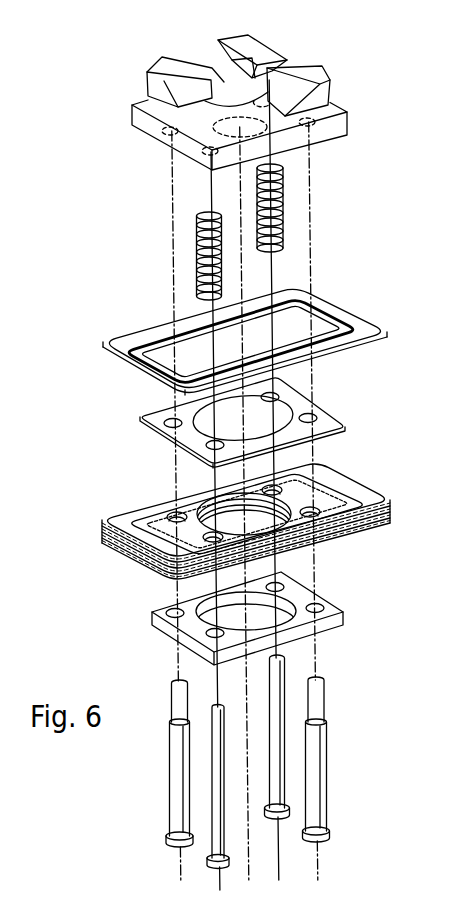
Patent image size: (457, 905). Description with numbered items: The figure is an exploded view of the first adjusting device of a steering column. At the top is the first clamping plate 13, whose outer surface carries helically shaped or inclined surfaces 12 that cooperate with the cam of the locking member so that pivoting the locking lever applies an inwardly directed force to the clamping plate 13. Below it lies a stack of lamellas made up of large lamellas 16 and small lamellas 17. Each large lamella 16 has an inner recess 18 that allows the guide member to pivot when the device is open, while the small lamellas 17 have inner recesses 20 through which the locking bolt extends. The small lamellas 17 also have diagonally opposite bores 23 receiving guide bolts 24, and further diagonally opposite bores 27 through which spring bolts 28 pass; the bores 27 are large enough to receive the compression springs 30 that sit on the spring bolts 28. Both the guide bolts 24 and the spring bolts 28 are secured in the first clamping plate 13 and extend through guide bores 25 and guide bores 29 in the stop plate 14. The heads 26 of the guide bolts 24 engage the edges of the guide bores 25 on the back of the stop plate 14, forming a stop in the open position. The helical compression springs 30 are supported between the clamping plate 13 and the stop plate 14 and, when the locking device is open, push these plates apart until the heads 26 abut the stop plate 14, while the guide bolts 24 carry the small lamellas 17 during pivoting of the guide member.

The helically shaped surfaces 12 is at (285, 90).
The first clamping plate 13 is at (338, 127).
The stop plate 14 is at (241, 613).
The large lamellas 16 is at (280, 324).
The small lamellas 17 is at (243, 430).
The inner recess 18 is at (293, 325).
The inner recesses 20 is at (267, 405).
The bores 23 is at (142, 417).
The guide bolts 24 is at (364, 768).
The guide bores 25 is at (323, 609).
The heads 26 is at (330, 838).
The bores 27 is at (192, 447).
The spring bolts 28 is at (213, 808).
The guide bores 29 is at (207, 637).
The compression springs 30 is at (198, 248).